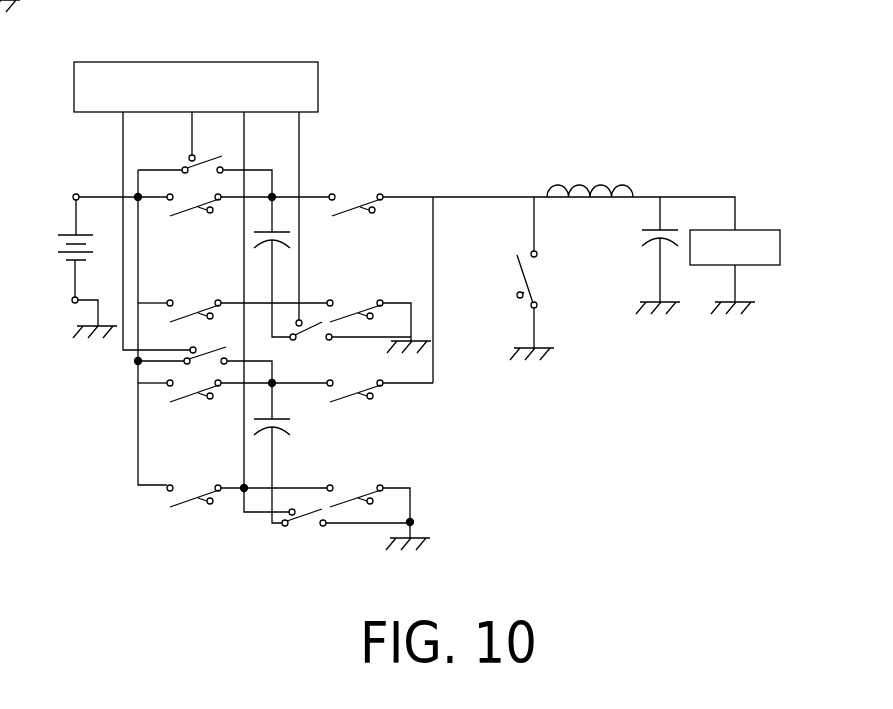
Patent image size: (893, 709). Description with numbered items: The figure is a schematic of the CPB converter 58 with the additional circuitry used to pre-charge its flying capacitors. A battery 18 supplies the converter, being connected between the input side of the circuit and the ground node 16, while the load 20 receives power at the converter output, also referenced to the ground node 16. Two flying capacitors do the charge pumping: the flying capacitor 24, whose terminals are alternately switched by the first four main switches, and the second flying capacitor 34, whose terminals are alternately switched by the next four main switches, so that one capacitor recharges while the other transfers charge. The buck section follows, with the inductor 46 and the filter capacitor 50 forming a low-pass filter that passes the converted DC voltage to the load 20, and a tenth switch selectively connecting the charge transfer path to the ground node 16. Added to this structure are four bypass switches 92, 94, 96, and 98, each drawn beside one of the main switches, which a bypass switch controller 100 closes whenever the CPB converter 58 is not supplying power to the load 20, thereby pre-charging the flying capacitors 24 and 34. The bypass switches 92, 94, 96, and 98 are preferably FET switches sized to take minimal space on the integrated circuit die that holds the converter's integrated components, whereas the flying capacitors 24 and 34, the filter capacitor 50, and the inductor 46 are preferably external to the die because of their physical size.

The CPB converter 58 is at (437, 62).
The bypass switch controller 100 is at (318, 88).
The battery 18 is at (78, 238).
The ground node 16 is at (97, 311).
The bypass switch 92 is at (196, 161).
The bypass switch 94 is at (306, 321).
The bypass switch 96 is at (207, 352).
The bypass switch 98 is at (313, 516).
The flying capacitor 24 is at (264, 246).
The second flying capacitor 34 is at (291, 430).
The inductor 46 is at (598, 186).
The filter capacitor 50 is at (646, 229).
The load 20 is at (738, 230).